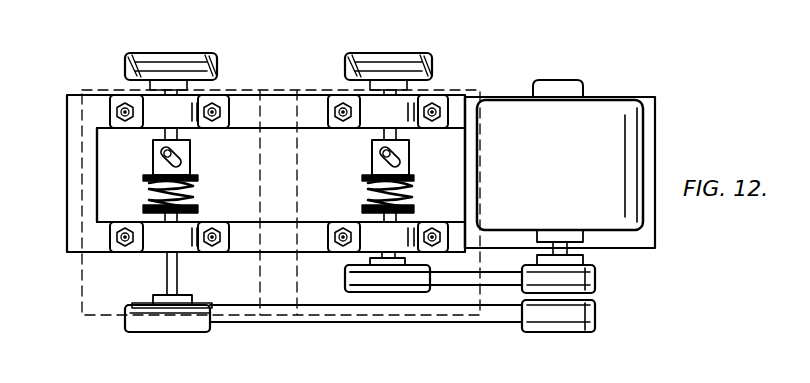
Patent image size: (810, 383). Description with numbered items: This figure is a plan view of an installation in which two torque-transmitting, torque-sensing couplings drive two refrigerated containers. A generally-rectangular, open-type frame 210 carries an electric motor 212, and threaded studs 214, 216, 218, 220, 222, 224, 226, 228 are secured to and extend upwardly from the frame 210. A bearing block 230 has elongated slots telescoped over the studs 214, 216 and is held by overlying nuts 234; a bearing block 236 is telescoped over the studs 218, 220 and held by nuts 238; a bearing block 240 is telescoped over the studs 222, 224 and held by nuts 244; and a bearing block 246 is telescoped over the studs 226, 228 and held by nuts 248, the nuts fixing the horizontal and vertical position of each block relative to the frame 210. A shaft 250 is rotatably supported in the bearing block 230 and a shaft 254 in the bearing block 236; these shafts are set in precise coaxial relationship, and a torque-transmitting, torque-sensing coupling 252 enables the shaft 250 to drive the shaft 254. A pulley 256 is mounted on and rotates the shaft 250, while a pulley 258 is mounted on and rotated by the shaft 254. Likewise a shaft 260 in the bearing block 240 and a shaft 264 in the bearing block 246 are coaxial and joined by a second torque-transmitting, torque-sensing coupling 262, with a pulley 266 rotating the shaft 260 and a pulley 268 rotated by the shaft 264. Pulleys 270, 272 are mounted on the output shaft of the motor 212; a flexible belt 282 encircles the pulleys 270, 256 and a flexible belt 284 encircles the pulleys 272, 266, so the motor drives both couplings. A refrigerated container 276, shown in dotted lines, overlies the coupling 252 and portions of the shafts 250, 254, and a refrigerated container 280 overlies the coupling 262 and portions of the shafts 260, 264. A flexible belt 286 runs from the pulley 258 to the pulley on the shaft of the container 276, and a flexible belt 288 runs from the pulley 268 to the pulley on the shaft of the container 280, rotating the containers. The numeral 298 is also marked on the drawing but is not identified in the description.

The frame 210 is at (274, 98).
The electric motor 212 is at (603, 102).
The threaded stud 214 is at (132, 253).
The threaded stud 216 is at (210, 252).
The threaded stud 218 is at (120, 95).
The threaded stud 220 is at (210, 124).
The threaded stud 222 is at (340, 254).
The threaded stud 224 is at (416, 222).
The threaded stud 226 is at (335, 128).
The threaded stud 228 is at (447, 95).
The bearing block 230 is at (158, 248).
The nuts 234 is at (118, 220).
The bearing block 236 is at (150, 124).
The nuts 238 is at (214, 95).
The bearing block 240 is at (439, 207).
The nuts 244 is at (340, 221).
The bearing block 246 is at (413, 124).
The nuts 248 is at (343, 93).
The shaft 250 is at (180, 288).
The torque-transmitting, torque-sensing coupling 252 is at (203, 193).
The shaft 254 is at (178, 66).
The pulley 256 is at (152, 332).
The pulley 258 is at (155, 60).
The shaft 260 is at (393, 259).
The torque-transmitting, torque-sensing coupling 262 is at (364, 188).
The shaft 264 is at (390, 62).
The pulley 266 is at (400, 293).
The pulley 268 is at (388, 50).
The pulley 270 is at (585, 332).
The pulley 272 is at (598, 302).
The refrigerated container 276 is at (82, 327).
The refrigerated container 280 is at (470, 322).
The flexible belt 282 is at (280, 324).
The flexible belt 284 is at (598, 278).
The flexible belt 286 is at (130, 68).
The flexible belt 288 is at (424, 66).
The frame end 298 is at (110, 130).